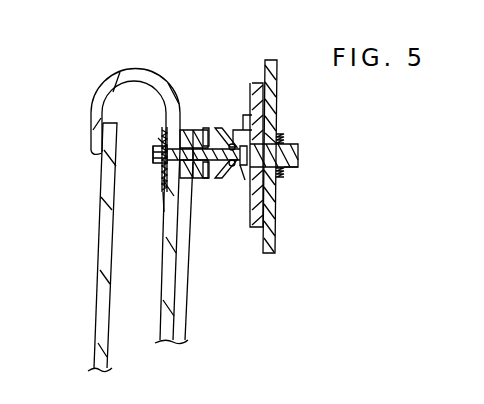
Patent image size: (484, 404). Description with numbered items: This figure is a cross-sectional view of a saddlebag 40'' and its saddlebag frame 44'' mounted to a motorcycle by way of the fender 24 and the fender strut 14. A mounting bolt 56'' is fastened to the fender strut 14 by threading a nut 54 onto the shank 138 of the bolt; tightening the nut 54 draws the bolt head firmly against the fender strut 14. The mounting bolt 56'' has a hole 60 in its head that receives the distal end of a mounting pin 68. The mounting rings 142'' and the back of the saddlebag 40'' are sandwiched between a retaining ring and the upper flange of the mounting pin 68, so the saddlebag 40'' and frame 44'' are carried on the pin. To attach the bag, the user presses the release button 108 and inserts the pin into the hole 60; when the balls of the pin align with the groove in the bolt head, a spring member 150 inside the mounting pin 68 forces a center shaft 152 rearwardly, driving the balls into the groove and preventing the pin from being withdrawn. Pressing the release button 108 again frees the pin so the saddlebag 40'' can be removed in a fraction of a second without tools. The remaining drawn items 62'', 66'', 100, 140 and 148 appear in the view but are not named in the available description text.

The fender strut 14 is at (253, 82).
The fender 24 is at (273, 60).
The saddlebag 40'' is at (108, 220).
The saddlebag frame 44'' is at (199, 235).
The nut 54 is at (281, 134).
The mounting bolt 56'' is at (299, 128).
The hole 60 is at (226, 178).
The washer 62'' is at (221, 137).
The stepped plate 66'' is at (244, 119).
The mounting pin 68 is at (157, 162).
The bolt 100 is at (226, 214).
The release button 108 is at (159, 138).
The shank 138 is at (290, 169).
The clip 140 is at (245, 181).
The mounting rings 142'' is at (212, 129).
The serrated strip 148 is at (164, 125).
The spring member 150 is at (184, 137).
The center shaft 152 is at (166, 212).